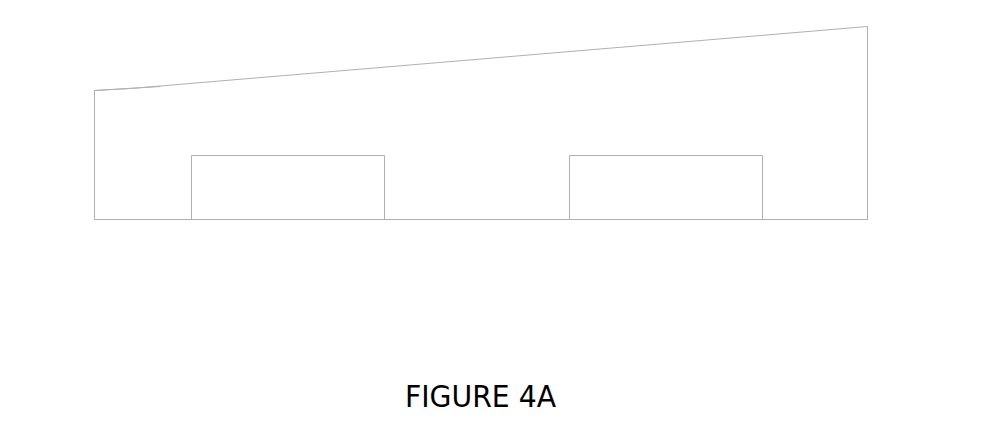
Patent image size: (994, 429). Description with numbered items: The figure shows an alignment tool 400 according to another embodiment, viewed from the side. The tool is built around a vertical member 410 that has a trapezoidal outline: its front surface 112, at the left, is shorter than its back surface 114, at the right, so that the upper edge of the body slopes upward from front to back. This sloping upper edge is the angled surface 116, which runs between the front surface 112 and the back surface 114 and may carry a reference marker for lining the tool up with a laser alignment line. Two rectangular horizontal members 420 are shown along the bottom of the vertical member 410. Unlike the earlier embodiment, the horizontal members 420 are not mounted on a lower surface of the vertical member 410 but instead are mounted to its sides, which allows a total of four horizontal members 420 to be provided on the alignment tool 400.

The alignment tool 400 is at (789, 254).
The vertical member 410 is at (480, 122).
The horizontal members 420 is at (477, 188).
The angled surface 116 is at (130, 86).
The front surface 112 is at (93, 174).
The back surface 114 is at (870, 158).